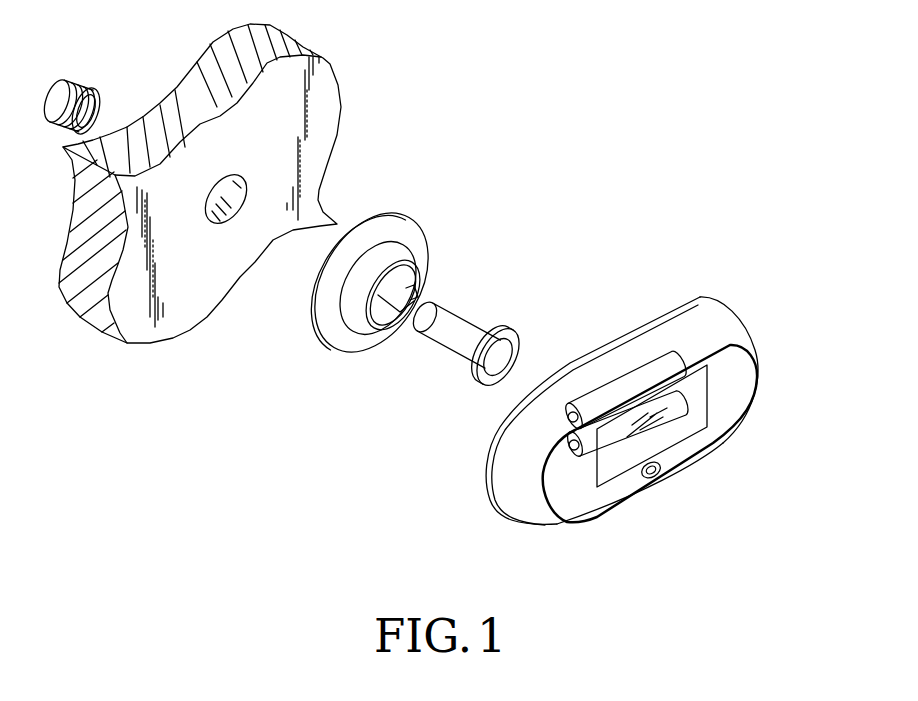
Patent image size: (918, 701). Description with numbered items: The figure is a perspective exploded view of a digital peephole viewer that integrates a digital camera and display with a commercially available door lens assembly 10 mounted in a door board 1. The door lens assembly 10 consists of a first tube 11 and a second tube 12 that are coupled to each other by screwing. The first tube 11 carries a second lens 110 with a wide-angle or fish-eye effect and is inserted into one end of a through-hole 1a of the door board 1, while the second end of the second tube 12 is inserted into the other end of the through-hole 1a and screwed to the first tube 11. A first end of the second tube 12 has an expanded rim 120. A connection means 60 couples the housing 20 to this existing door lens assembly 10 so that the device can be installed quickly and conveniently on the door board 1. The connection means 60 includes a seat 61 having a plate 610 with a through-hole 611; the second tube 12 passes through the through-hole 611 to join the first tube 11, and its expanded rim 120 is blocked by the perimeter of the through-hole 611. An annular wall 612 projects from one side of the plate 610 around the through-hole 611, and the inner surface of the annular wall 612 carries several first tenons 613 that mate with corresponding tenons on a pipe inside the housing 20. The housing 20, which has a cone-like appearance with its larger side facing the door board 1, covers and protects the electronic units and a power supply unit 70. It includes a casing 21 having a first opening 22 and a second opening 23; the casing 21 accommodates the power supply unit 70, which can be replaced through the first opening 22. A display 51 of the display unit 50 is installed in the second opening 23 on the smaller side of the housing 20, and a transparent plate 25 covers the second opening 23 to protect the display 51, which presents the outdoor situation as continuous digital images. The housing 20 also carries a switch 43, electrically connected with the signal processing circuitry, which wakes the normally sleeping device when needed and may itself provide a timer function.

The door board 1 is at (323, 103).
The through-hole 1a is at (210, 227).
The first tube 11 is at (109, 75).
The second lens 110 is at (93, 94).
The connection means 60 is at (378, 264).
The plate 610 is at (412, 230).
The seat 61 is at (327, 303).
The annular wall 612 is at (353, 312).
The first tenons 613 is at (420, 277).
The through-hole 611 is at (388, 330).
The door lens assembly 10 is at (499, 348).
The second tube 12 is at (462, 350).
The expanded rim 120 is at (516, 341).
The housing 20 is at (629, 414).
The casing 21 is at (642, 333).
The first opening 22 is at (687, 299).
The second opening 23 is at (558, 525).
The transparent plate 25 is at (590, 505).
The power supply unit 70 is at (567, 405).
The display unit 50 is at (695, 427).
The display 51 is at (675, 437).
The switch 43 is at (657, 480).